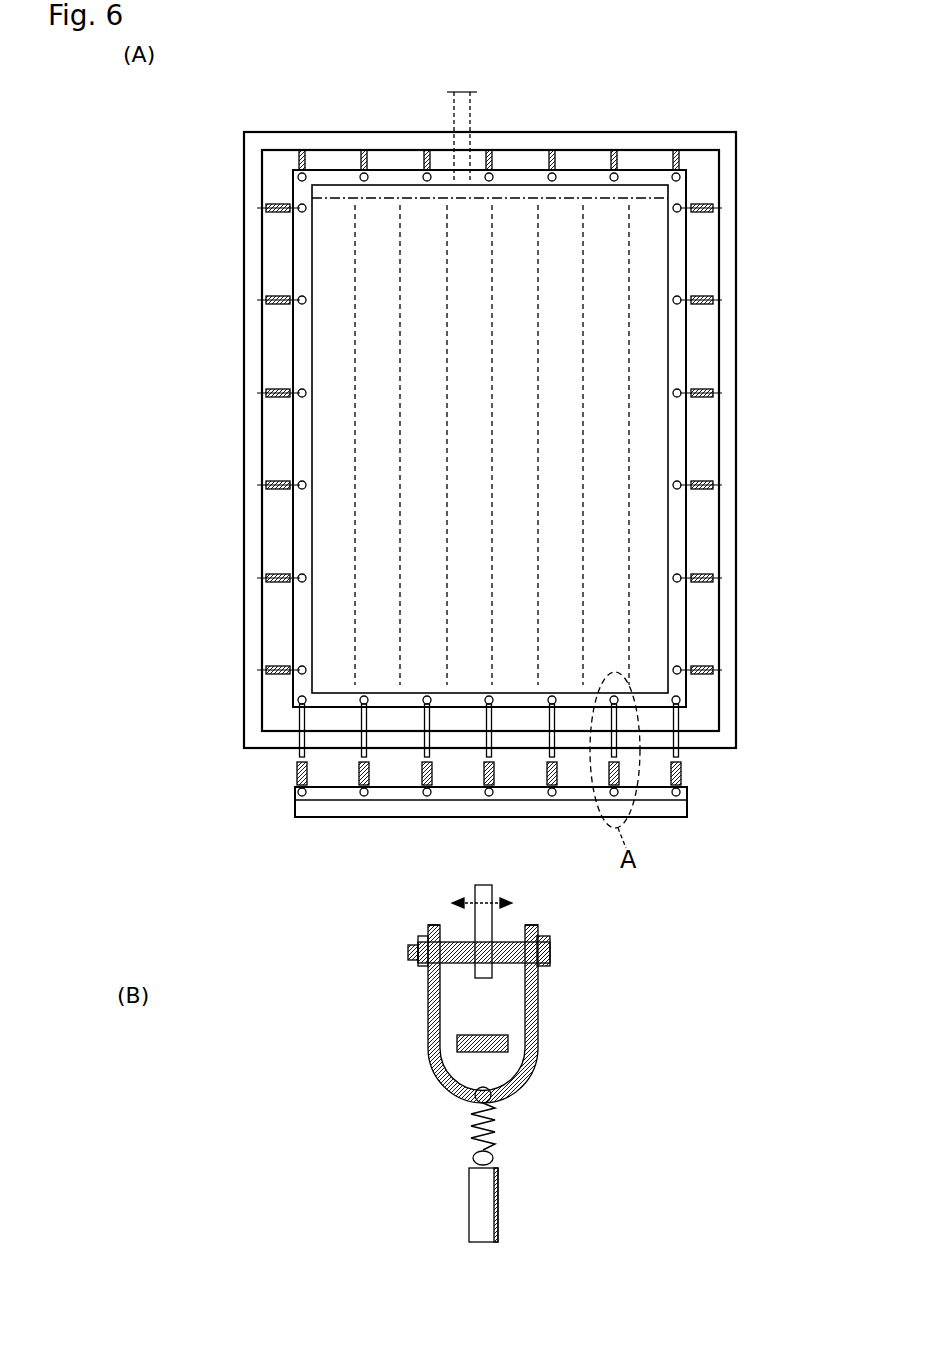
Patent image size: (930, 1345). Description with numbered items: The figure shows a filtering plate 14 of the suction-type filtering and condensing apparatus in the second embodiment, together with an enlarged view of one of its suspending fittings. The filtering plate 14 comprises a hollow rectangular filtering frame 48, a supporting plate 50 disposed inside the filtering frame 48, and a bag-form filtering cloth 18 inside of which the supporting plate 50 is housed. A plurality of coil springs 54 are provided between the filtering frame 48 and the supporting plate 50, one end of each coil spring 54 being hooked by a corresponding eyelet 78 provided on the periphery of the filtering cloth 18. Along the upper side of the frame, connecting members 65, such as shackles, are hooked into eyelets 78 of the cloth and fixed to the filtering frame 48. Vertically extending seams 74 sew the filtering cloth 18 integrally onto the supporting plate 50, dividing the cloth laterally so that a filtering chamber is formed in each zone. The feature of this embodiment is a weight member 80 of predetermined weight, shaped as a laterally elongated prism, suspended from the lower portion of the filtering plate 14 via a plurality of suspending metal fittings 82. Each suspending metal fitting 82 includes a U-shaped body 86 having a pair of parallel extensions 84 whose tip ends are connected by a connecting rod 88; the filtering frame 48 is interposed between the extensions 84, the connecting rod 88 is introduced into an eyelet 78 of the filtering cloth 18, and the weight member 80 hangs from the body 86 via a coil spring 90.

The filtering plate 14 is at (214, 580).
The filtering cloth 18 is at (640, 328).
The filtering frame 48 is at (597, 130).
The supporting plate 50 is at (678, 455).
The coil spring 54 is at (282, 296).
The connecting member 65 is at (300, 168).
The seam 74 is at (355, 515).
The eyelet 78 is at (300, 392).
The weight member 80 is at (305, 808).
The suspending metal fitting 82 is at (434, 895).
The extension 84 is at (430, 1045).
The U-shaped body 86 is at (410, 984).
The connecting rod 88 is at (452, 948).
The coil spring 90 is at (297, 774).